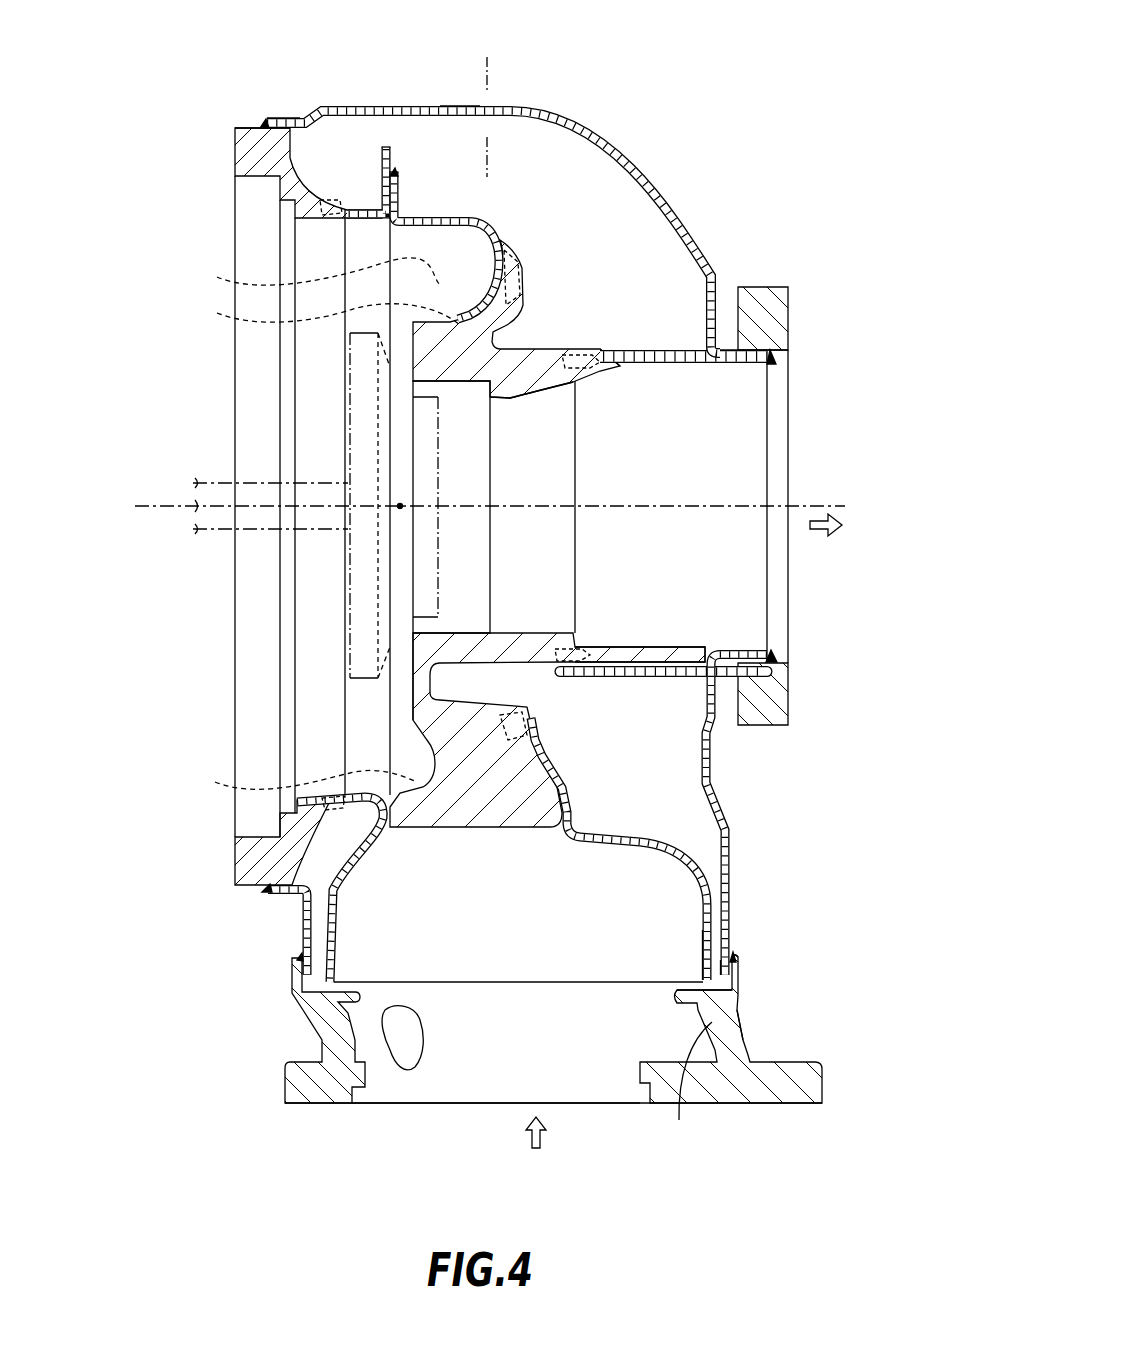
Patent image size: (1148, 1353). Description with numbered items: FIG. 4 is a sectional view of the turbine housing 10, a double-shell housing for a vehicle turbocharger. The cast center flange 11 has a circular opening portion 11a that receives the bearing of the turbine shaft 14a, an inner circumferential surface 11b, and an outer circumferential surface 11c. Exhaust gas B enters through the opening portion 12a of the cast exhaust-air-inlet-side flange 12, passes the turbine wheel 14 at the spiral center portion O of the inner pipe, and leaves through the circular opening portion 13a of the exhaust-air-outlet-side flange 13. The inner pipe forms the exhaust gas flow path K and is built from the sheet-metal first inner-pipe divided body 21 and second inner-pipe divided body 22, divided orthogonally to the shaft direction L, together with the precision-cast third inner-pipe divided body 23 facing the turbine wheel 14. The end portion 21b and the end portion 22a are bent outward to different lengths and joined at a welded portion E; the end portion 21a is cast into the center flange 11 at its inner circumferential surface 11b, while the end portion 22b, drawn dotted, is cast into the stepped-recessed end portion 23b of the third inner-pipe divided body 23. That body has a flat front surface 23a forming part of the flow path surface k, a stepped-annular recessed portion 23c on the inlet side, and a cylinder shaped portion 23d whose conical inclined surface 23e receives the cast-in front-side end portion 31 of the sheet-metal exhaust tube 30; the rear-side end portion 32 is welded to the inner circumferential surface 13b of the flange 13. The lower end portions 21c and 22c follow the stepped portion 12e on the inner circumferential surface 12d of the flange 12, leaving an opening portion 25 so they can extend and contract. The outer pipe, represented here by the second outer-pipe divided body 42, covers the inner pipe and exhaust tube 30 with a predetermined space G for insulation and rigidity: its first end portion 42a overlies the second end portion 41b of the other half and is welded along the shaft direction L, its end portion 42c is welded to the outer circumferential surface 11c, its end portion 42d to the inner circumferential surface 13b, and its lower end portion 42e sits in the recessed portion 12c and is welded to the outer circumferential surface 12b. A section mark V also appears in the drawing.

The turbine housing 10 is at (598, 86).
The center flange 11 is at (234, 154).
The circular opening portion 11a is at (247, 697).
The inner circumferential surface 11b is at (332, 222).
The outer circumferential surface 11c is at (236, 127).
The exhaust-air-inlet-side flange 12 is at (732, 1104).
The opening portion 12a is at (447, 1096).
The outer circumferential surface 12b is at (742, 1015).
The recessed portion 12c is at (740, 1002).
The inner circumferential surface 12d is at (679, 1120).
The stepped portion 12e is at (675, 995).
The exhaust-air-outlet-side flange 13 is at (790, 313).
The circular opening portion 13a is at (786, 443).
The inner circumferential surface 13b is at (790, 355).
The turbine wheel 14 is at (441, 472).
The turbine shaft 14a is at (265, 530).
The first inner-pipe divided body 21 is at (378, 194).
The front-circumferential-edge-side end portion 21a is at (330, 212).
The rear-circumferential-edge-side end portion 21b is at (385, 146).
The lower end portion 21c is at (298, 955).
The second inner-pipe divided body 22 is at (496, 229).
The front-circumferential-edge-side end portion 22a is at (399, 195).
The rear-circumferential-edge-side end portion 22b is at (497, 283).
The lower end portion 22c is at (713, 933).
The third inner-pipe divided body 23 is at (530, 348).
The front surface 23a is at (415, 688).
The stepped-recessed shaped end portion 23b is at (534, 700).
The recessed portion 23c is at (470, 381).
The cylinder shaped portion 23d is at (568, 348).
The inclined surface 23e is at (545, 386).
The opening portion 25 is at (293, 990).
The exhaust tube 30 is at (653, 680).
The front-side end portion 31 is at (590, 368).
The rear-side end portion 32 is at (735, 647).
The second end portion 41b is at (396, 168).
The second outer-pipe divided body 42 is at (628, 140).
The first end portion 42a is at (457, 106).
The front-circumferential-edge-side end portion 42c is at (293, 117).
The rear-circumferential-edge side end portion 42d is at (762, 348).
The lower end portion 42e is at (736, 973).
The exhaust gas B is at (825, 538).
The welded portion E is at (265, 121).
The predetermined space G is at (643, 240).
The exhaust gas flow path K is at (318, 274).
The flow path surface k is at (328, 546).
The shaft direction L is at (150, 503).
The spiral center portion O is at (400, 511).
The section line V is at (489, 170).